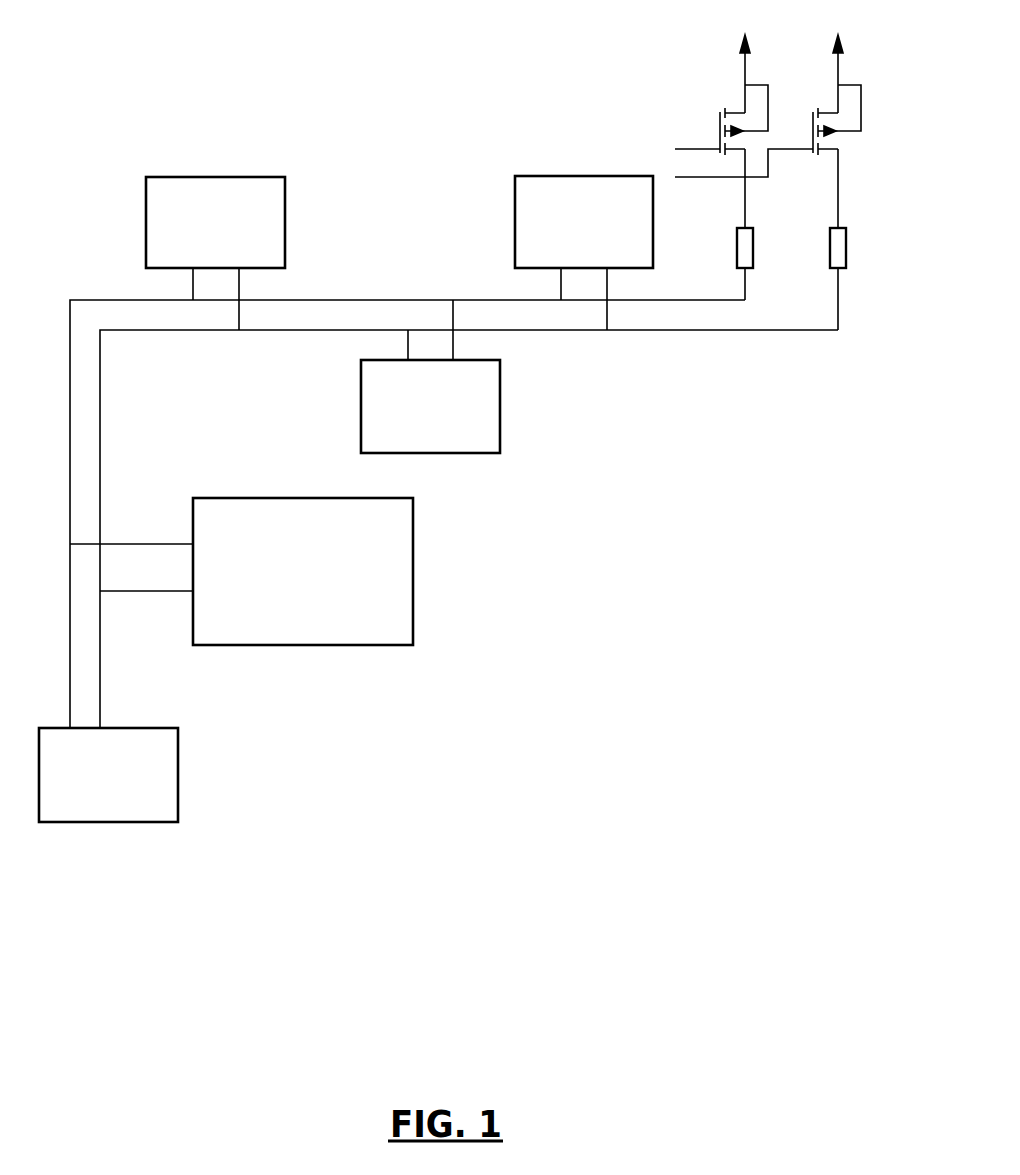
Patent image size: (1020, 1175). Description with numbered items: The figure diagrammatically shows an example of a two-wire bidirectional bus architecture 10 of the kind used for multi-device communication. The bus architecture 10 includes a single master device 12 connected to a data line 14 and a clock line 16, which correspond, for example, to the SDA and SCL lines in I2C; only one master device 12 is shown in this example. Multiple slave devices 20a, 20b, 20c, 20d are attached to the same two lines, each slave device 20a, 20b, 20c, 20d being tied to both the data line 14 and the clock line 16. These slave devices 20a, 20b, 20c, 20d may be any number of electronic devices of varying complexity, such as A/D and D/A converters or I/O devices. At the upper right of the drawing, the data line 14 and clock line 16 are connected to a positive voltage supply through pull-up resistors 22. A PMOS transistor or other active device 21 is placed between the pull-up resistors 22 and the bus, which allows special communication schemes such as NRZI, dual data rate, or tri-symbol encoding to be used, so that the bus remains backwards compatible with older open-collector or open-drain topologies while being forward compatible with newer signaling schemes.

The two-wire bidirectional bus architecture 10 is at (454, 501).
The master device 12 is at (413, 571).
The data line 14 is at (70, 377).
The clock line 16 is at (100, 448).
The slave device 20a is at (285, 190).
The slave device 20b is at (178, 775).
The slave device 20c is at (500, 407).
The slave device 20d is at (515, 192).
The PMOS transistor or other active device 21 is at (690, 115).
The pull-up resistors 22 is at (870, 238).